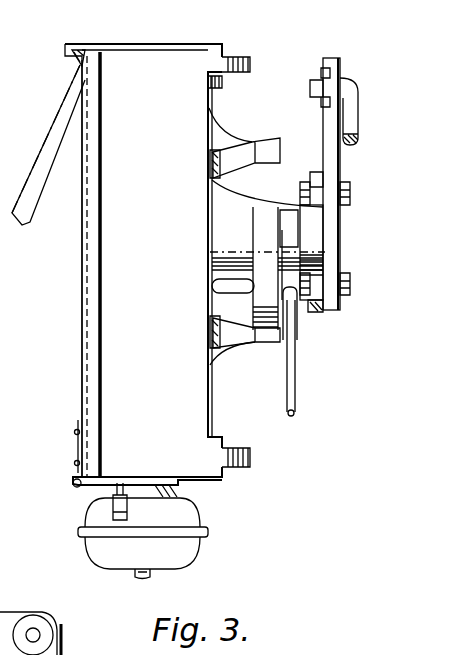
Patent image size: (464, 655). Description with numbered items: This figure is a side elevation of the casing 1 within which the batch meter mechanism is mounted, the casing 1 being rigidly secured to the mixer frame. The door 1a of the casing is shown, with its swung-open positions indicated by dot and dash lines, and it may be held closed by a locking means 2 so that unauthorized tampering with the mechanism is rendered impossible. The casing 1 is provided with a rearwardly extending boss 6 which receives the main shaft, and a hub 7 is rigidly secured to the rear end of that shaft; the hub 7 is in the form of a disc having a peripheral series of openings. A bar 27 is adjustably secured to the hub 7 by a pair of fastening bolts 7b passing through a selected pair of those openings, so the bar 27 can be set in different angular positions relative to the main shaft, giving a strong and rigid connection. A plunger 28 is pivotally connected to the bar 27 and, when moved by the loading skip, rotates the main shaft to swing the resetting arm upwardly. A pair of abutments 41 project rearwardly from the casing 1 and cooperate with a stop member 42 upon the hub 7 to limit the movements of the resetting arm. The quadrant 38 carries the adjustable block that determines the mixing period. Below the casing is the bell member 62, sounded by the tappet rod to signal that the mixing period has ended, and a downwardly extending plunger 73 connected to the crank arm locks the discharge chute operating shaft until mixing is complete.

The casing 1 is at (157, 270).
The door 1a is at (82, 280).
The locking means 2 is at (113, 503).
The boss 6 is at (238, 207).
The hub 7 is at (316, 310).
The bolts 7b is at (302, 184).
The bar 27 is at (328, 118).
The plunger 28 is at (350, 78).
The quadrant 38 is at (42, 145).
The abutments 41 is at (233, 140).
The stop member 42 is at (255, 287).
The bell member 62 is at (90, 515).
The plunger 73 is at (288, 414).